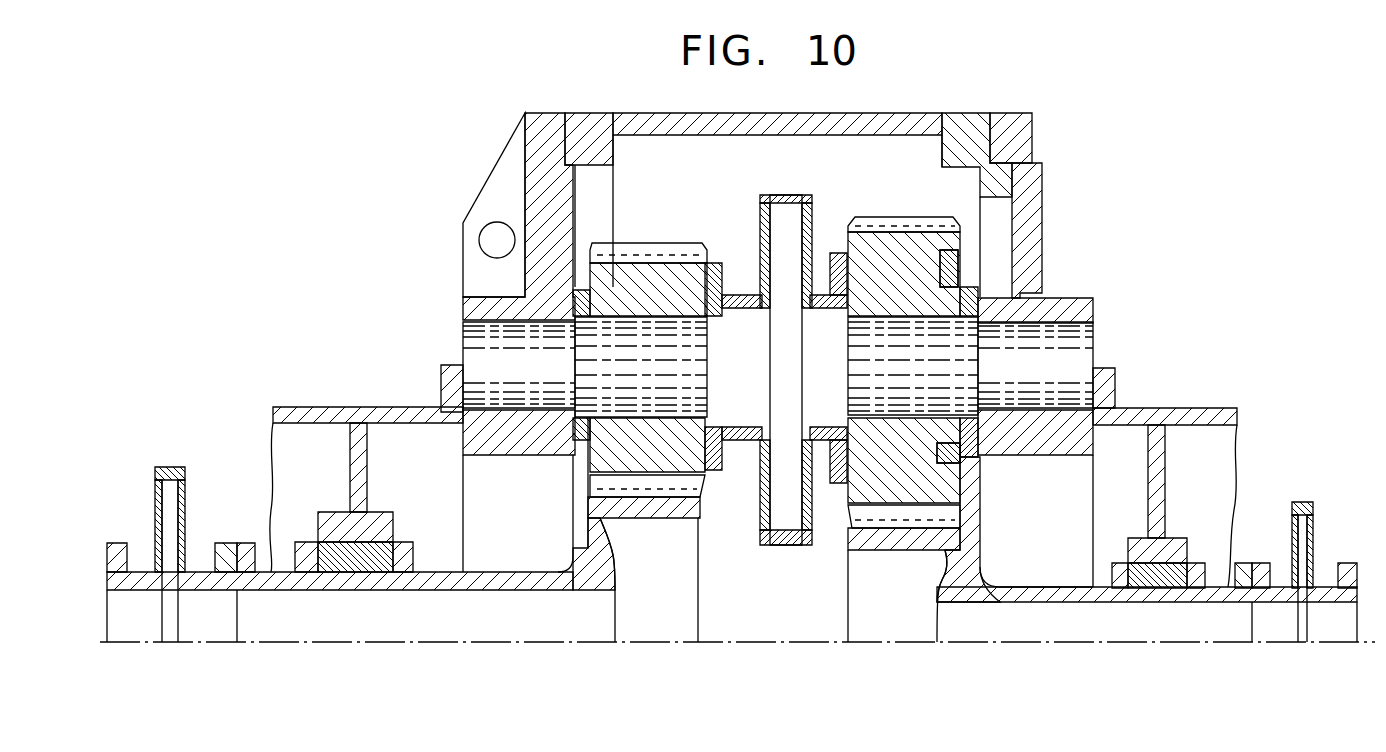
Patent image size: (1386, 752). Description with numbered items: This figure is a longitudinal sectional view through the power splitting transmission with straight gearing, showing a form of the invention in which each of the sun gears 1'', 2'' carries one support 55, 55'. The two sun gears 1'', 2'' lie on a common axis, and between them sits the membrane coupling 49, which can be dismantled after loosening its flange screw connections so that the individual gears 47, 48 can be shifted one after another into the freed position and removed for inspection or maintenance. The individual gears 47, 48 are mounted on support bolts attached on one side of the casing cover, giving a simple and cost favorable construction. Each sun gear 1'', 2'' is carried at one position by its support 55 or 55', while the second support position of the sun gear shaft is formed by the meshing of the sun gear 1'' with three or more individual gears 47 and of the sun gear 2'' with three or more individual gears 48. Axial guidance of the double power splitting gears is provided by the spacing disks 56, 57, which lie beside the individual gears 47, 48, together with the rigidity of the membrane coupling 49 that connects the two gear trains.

The individual gear 47 is at (625, 270).
The individual gear 48 is at (868, 236).
The membrane coupling 49 is at (788, 207).
The support 55 is at (336, 533).
The support 55' is at (1179, 545).
The spacing disk 56 is at (587, 300).
The spacing disk 57 is at (1016, 292).
The sun gear 1'' is at (649, 574).
The sun gear 2'' is at (897, 589).